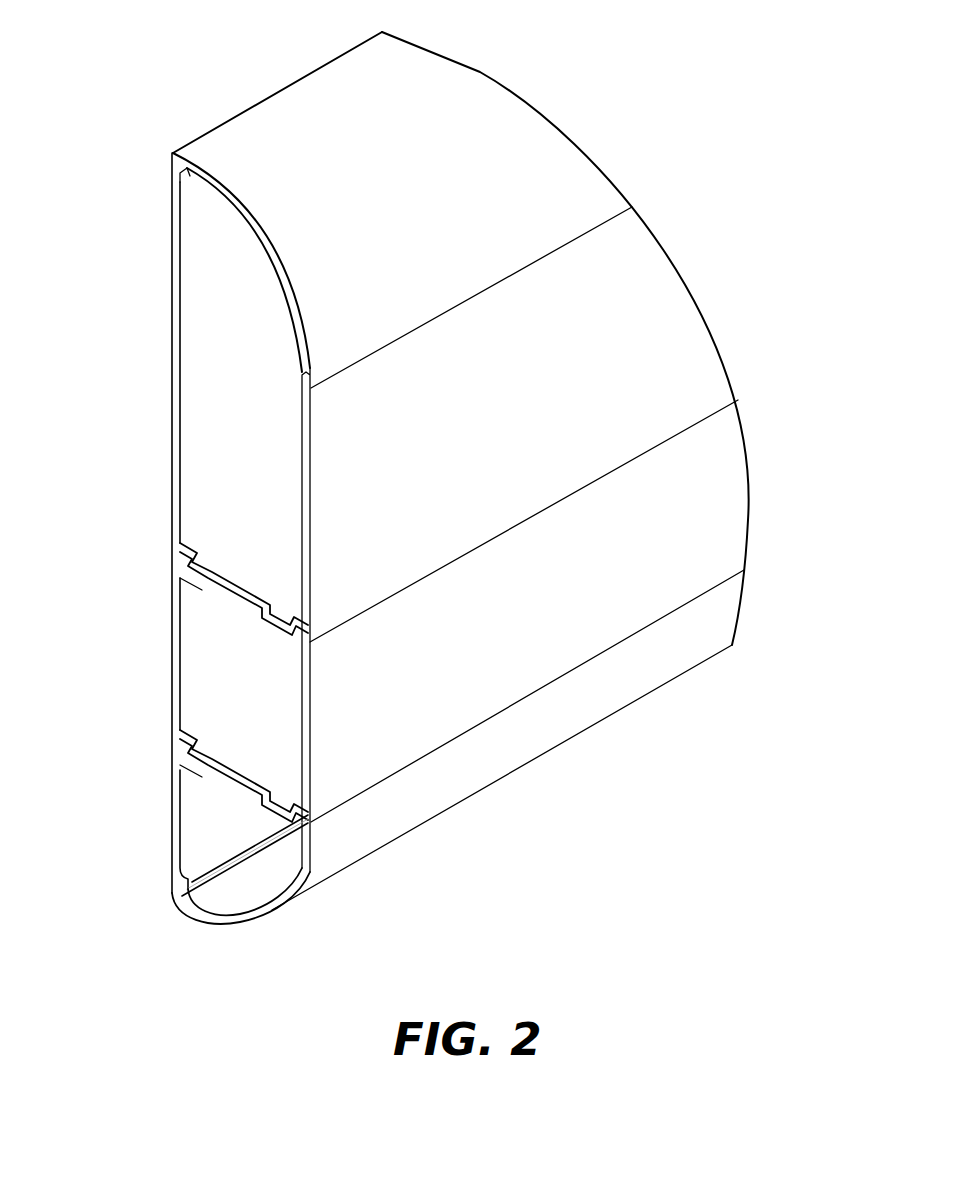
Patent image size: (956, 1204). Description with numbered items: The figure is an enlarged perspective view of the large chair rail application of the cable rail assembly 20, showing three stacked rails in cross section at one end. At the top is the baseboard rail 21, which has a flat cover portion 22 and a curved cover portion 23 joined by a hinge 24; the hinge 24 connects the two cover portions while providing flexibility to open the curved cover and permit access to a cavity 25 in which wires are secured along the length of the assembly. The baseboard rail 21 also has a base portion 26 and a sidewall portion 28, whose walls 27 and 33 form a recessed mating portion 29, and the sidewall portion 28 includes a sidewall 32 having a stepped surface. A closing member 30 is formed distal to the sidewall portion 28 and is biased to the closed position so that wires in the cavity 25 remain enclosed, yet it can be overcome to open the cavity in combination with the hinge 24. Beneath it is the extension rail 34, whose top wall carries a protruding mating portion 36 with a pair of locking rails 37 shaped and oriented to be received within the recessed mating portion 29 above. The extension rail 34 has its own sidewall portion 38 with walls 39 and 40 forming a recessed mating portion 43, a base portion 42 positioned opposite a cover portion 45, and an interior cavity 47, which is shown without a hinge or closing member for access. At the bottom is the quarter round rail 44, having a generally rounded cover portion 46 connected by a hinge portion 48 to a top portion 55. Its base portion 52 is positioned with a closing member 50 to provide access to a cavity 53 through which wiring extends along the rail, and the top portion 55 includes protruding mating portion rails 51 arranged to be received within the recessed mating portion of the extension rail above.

The cable rail assembly 20 is at (688, 95).
The baseboard rail 21 is at (685, 262).
The cover portion 22 is at (622, 218).
The curved cover portion 23 is at (512, 110).
The hinge 24 is at (306, 368).
The cavity 25 is at (215, 260).
The base portion 26 is at (172, 320).
The wall 27 is at (205, 563).
The sidewall portion 28 is at (188, 545).
The recessed mating portion 29 is at (243, 590).
The closing member 30 is at (170, 180).
The sidewall 32 is at (254, 552).
The wall 33 is at (190, 556).
The extension rail 34 is at (752, 466).
The protruding mating portion 36 is at (250, 612).
The locking rails 37 is at (256, 608).
The sidewall portion 38 is at (188, 729).
The wall 39 is at (200, 748).
The wall 40 is at (186, 740).
The base portion 42 is at (172, 690).
The recessed mating portion 43 is at (238, 722).
The quarter round rail 44 is at (750, 612).
The cover portion 45 is at (708, 424).
The cover portion 46 is at (600, 708).
The cavity 47 is at (215, 681).
The hinge portion 48 is at (300, 880).
The closing member 50 is at (168, 882).
The protruding mating portion rails 51 is at (258, 784).
The base portion 52 is at (172, 848).
The cavity 53 is at (215, 837).
The top portion 55 is at (256, 806).